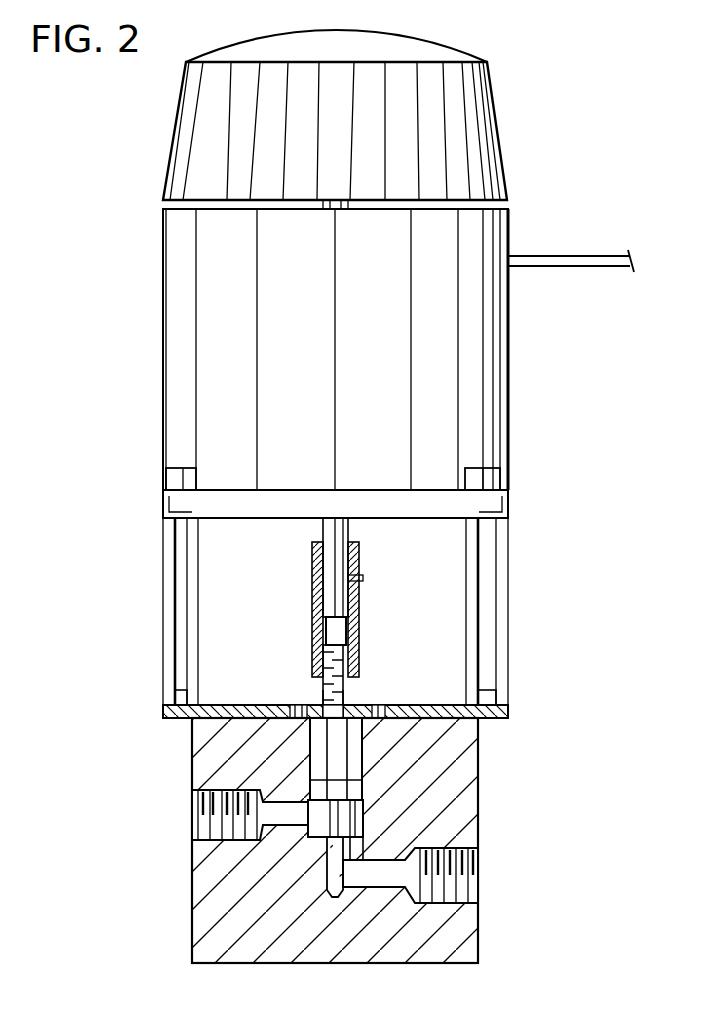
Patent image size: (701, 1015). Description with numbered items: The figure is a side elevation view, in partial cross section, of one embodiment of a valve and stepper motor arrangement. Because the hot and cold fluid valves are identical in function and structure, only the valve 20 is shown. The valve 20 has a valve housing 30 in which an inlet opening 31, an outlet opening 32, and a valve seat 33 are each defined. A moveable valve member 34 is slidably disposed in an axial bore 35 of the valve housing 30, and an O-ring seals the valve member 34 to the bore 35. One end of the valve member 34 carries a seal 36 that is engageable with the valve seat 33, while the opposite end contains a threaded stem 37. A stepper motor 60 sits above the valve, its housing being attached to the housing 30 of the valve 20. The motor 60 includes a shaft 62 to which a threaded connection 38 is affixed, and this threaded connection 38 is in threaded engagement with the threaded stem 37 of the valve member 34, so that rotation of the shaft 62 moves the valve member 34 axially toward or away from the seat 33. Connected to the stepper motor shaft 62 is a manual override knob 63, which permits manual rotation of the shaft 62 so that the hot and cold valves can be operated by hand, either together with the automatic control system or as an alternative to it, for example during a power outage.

The hot fluid valve 20 is at (525, 716).
The valve housing 30 is at (192, 928).
The inlet opening 31 is at (447, 900).
The outlet opening 32 is at (200, 808).
The valve seat 33 is at (357, 838).
The moveable valve member 34 is at (322, 705).
The axial bore 35 is at (363, 748).
The seal 36 is at (330, 817).
The threaded stem 37 is at (348, 695).
The threaded connection 38 is at (360, 633).
The stepper motor 60 is at (158, 284).
The shaft 62 is at (333, 578).
The manual override knob 63 is at (500, 155).